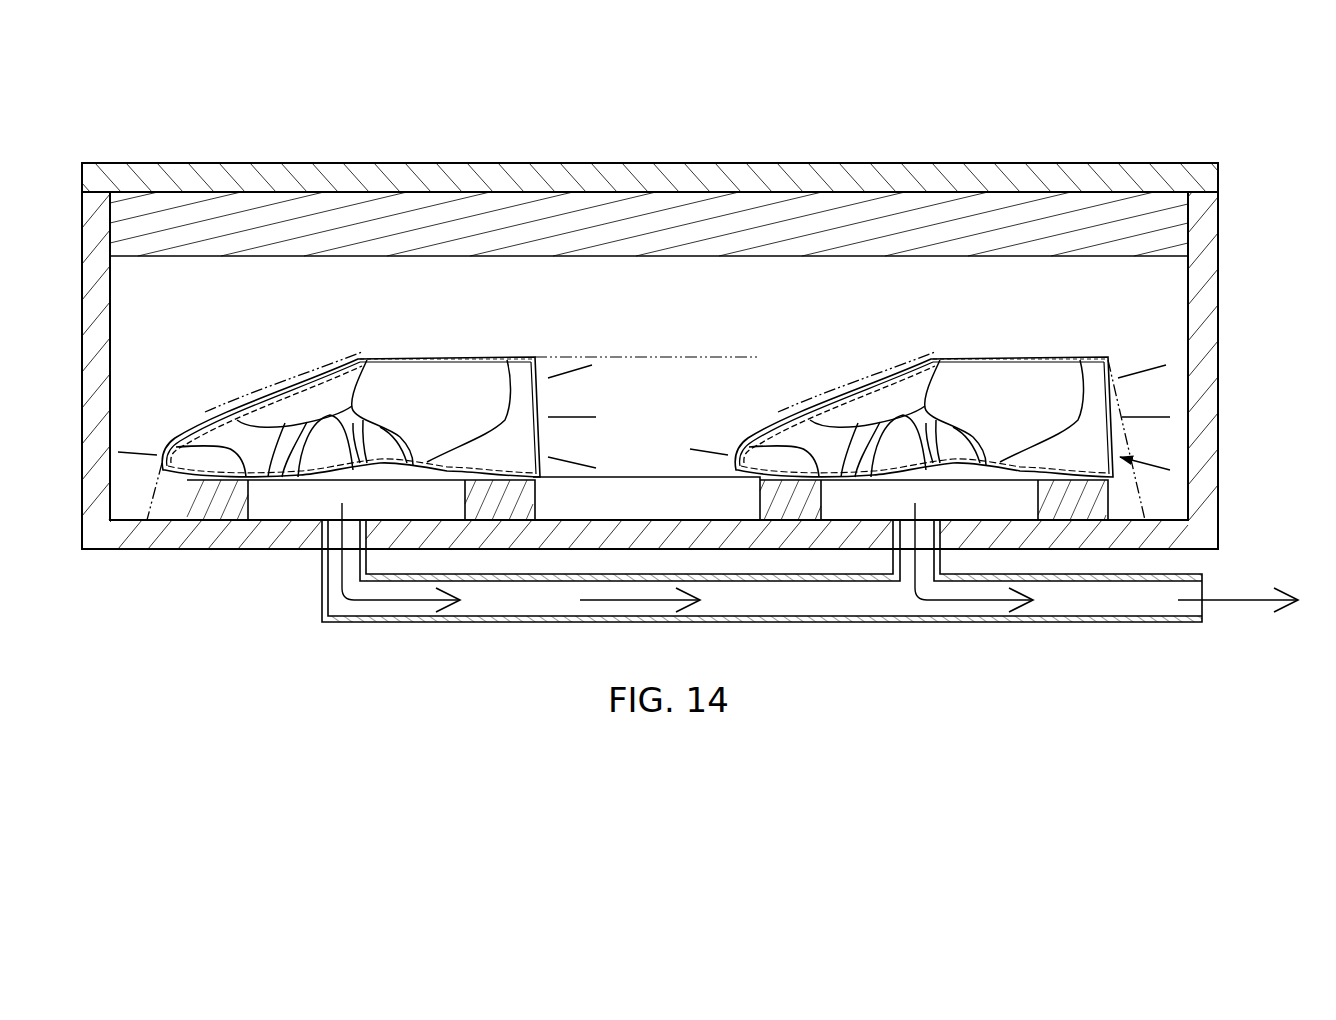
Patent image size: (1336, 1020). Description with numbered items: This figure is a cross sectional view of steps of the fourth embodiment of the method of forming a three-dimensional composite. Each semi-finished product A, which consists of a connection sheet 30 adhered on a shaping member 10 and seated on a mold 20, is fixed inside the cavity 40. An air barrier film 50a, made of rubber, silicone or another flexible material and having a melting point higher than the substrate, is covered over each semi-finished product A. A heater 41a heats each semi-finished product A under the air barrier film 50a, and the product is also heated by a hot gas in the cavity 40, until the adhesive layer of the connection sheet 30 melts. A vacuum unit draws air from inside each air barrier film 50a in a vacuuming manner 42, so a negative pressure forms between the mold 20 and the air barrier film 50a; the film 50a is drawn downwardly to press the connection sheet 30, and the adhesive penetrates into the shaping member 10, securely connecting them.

The shaping member 10 is at (200, 425).
The mold 20 is at (418, 372).
The connection sheet 30 is at (488, 376).
The cavity 40 is at (646, 272).
The heater 41a is at (748, 225).
The vacuuming manner 42 is at (829, 562).
The air barrier film 50a is at (328, 368).
The semi-finished product A is at (450, 344).